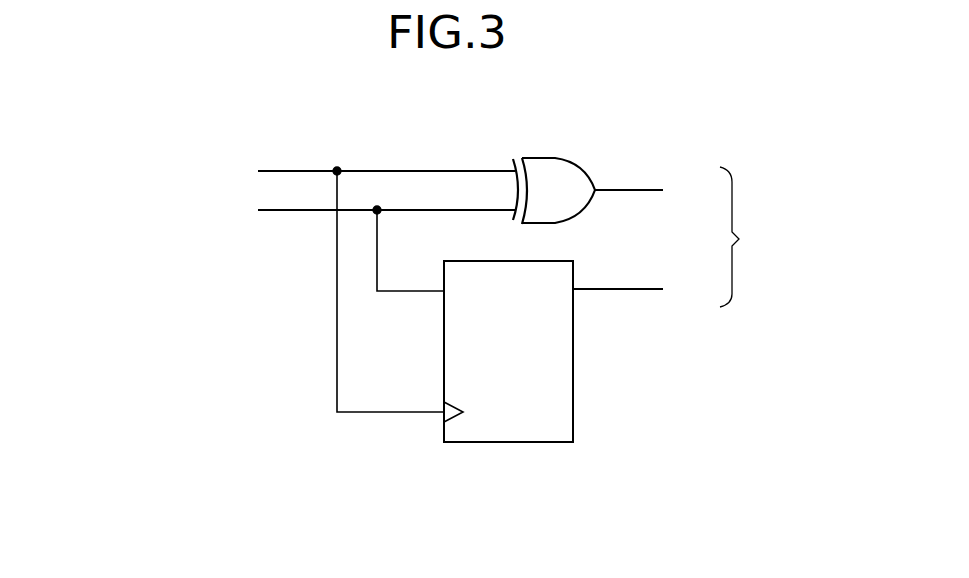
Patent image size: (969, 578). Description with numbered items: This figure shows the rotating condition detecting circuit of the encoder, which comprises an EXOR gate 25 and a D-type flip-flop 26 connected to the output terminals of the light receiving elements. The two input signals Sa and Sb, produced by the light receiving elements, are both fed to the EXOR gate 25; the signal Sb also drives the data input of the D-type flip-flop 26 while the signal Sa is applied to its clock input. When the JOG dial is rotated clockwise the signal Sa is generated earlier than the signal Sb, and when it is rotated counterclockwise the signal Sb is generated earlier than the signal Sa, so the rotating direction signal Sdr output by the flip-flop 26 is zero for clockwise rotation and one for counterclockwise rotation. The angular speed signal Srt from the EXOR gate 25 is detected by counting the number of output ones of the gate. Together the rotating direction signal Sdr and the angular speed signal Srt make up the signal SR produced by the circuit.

The EXOR gate 25 is at (558, 162).
The D-type flip-flop 26 is at (562, 363).
The signal Sa is at (366, 285).
The signal Sb is at (366, 244).
The angular speed signal Srt is at (651, 191).
The rotating direction signal Sdr is at (642, 288).
The signal SR is at (751, 237).